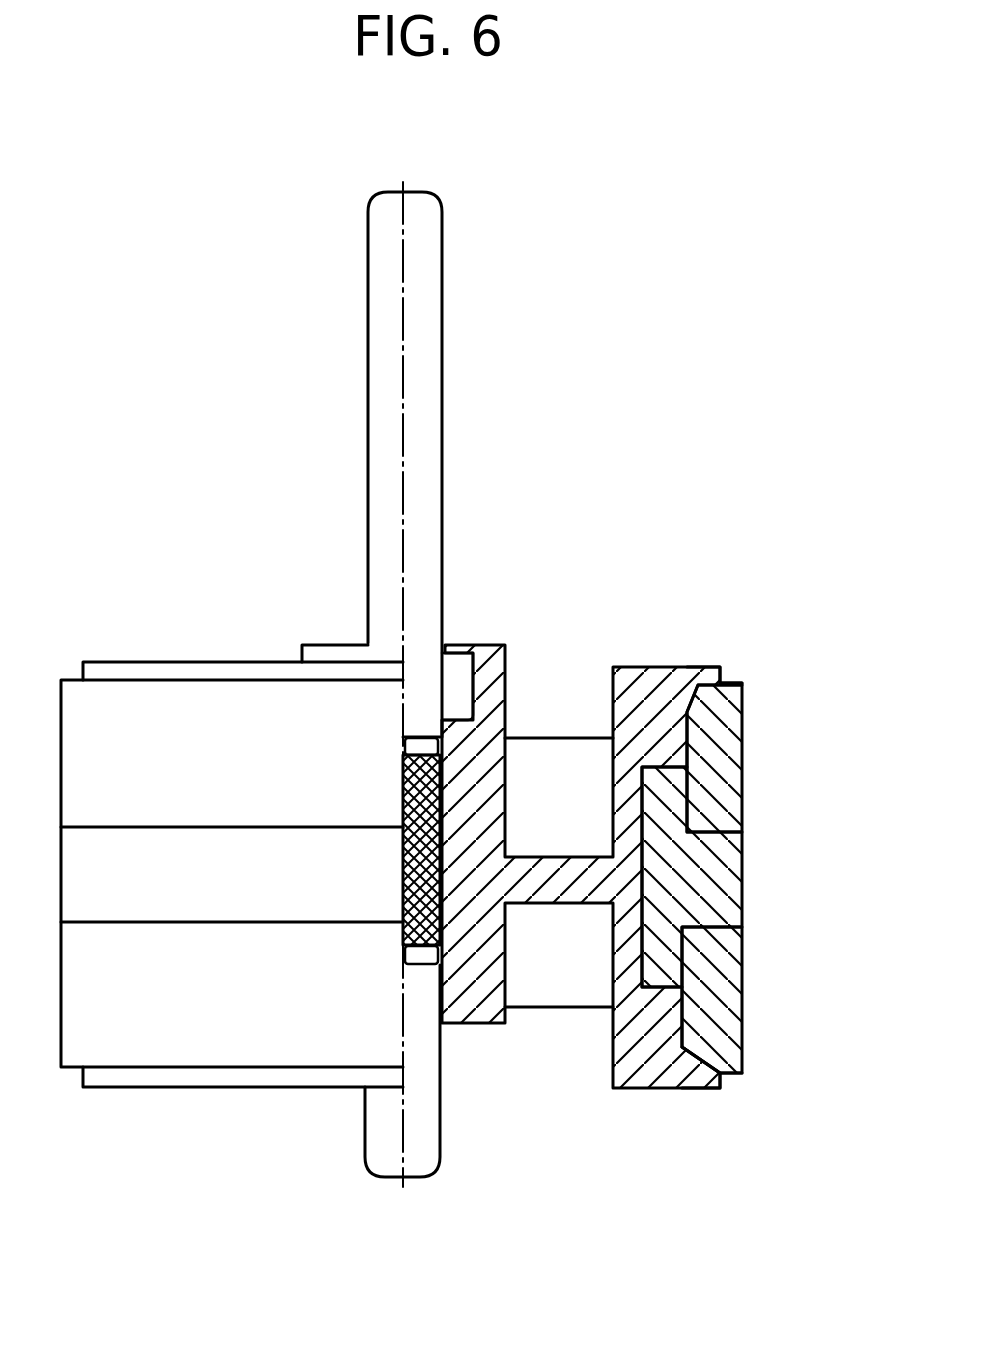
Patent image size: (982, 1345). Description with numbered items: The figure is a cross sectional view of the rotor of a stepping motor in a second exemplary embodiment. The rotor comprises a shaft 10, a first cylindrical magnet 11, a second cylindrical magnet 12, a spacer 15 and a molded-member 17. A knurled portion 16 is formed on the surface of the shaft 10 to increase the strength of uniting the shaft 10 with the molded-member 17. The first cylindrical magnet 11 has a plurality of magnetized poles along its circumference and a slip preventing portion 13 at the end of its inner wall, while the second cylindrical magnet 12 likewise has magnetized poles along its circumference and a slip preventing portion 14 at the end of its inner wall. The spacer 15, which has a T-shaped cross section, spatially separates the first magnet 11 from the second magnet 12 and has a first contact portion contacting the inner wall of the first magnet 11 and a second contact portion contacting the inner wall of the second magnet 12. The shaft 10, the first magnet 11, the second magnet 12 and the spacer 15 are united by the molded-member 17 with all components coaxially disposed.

The shaft 10 is at (377, 380).
The first cylindrical magnet 11 is at (723, 755).
The second cylindrical magnet 12 is at (723, 982).
The slip preventing portion 13 is at (690, 690).
The slip preventing portion 14 is at (687, 1063).
The spacer 15 is at (723, 877).
The knurled portion 16 is at (418, 757).
The molded-member 17 is at (467, 975).